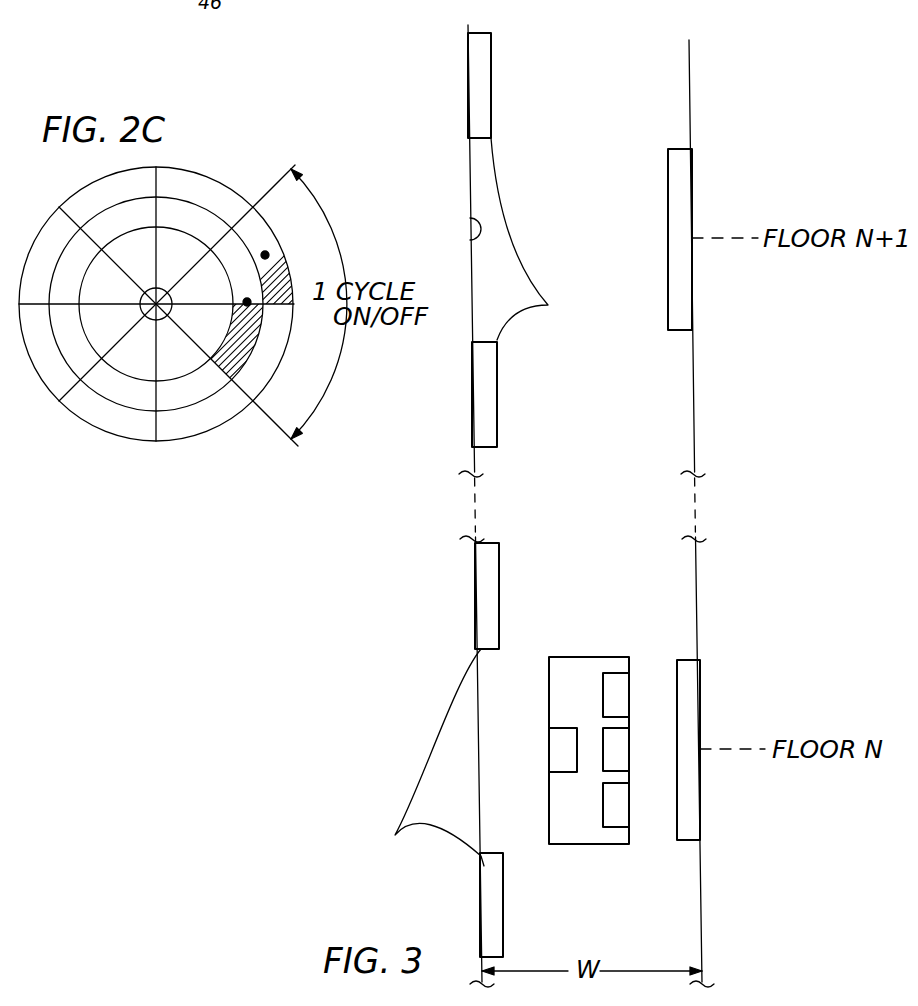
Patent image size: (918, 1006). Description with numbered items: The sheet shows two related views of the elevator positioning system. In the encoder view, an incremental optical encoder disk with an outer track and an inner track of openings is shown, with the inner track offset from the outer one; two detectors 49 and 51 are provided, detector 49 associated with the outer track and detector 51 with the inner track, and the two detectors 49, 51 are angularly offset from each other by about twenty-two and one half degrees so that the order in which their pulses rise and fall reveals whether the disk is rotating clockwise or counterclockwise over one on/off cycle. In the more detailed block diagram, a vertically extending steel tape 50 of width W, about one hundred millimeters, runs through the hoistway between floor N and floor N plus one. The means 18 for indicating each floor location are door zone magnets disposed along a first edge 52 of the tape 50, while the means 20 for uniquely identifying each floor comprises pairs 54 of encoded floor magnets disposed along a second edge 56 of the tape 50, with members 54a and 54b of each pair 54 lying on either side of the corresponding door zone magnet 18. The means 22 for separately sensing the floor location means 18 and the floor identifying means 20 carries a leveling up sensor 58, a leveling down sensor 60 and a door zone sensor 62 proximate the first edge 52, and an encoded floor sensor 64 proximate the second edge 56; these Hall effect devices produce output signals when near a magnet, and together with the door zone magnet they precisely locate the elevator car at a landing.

In FIG. 3, the means for indicating each floor location 18 is at (675, 207).
In FIG. 3, the means for uniquely identifying each floor 20 is at (482, 495).
In FIG. 3, the means for separately sensing the floor location means and the floor identifying 22 is at (589, 736).
In FIG. 2C, the detector 49 is at (265, 255).
In FIG. 3, the tape 50 is at (593, 178).
In FIG. 2C, the detector 51 is at (247, 302).
In FIG. 3, the first edge 52 is at (693, 368).
In FIG. 3, the pairs of encoded floor magnets 54 is at (548, 305).
In FIG. 3, the member of the pair of encoded floor magnets 54a is at (478, 127).
In FIG. 3, the member of the pair of encoded floor magnets 54b is at (485, 395).
In FIG. 3, the second edge 56 is at (470, 240).
In FIG. 3, the leveling up sensor 58 is at (627, 705).
In FIG. 3, the leveling down sensor 60 is at (627, 815).
In FIG. 3, the door zone sensor 62 is at (627, 760).
In FIG. 3, the encoded floor sensor 64 is at (574, 760).